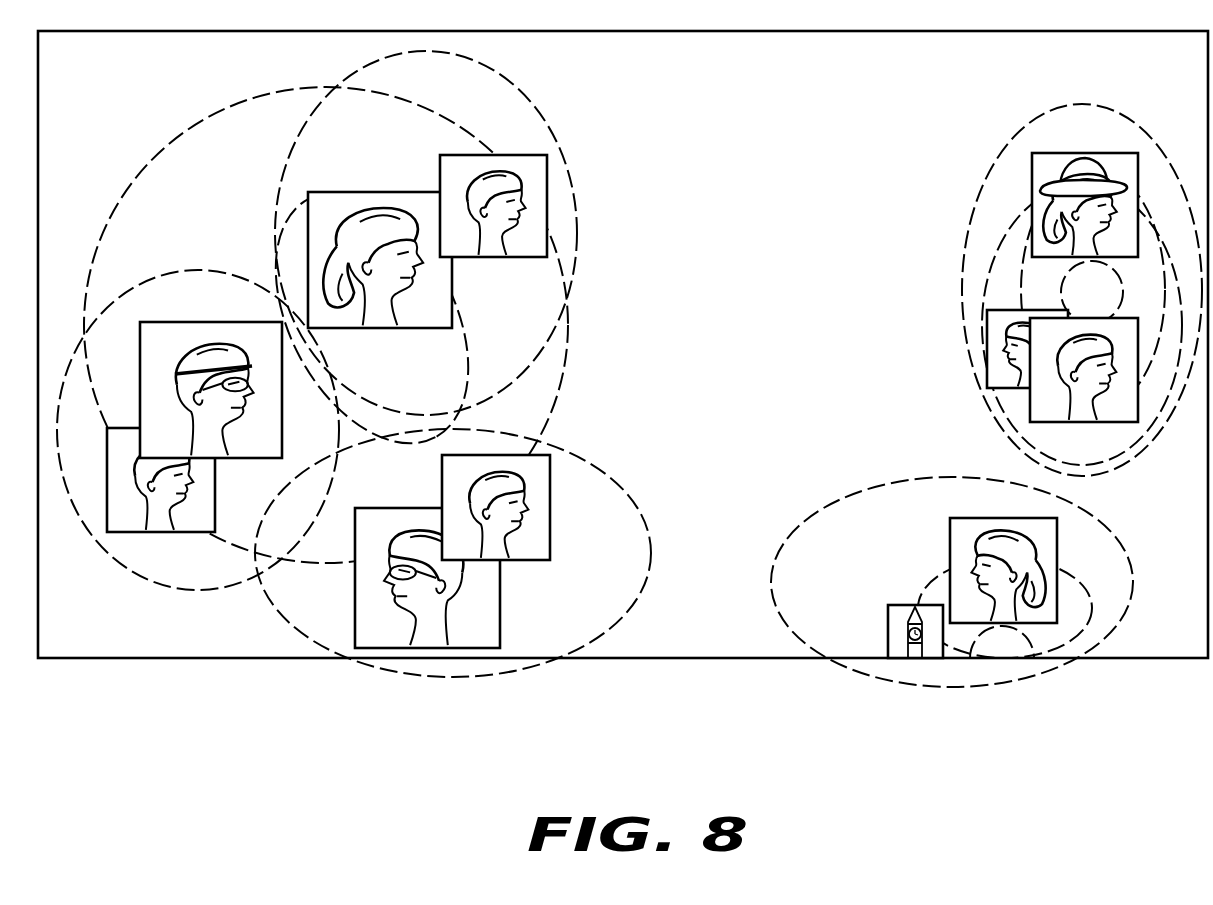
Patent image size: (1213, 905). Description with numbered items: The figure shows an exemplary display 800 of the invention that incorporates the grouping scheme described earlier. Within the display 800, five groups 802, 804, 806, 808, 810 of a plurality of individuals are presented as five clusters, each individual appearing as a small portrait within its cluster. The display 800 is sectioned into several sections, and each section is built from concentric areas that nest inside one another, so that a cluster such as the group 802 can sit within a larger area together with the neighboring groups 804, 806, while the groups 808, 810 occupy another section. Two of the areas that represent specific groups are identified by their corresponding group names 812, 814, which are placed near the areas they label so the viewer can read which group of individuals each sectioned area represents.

The display 800 is at (672, 771).
The group 802 is at (527, 104).
The group 804 is at (164, 272).
The group 806 is at (587, 459).
The group 808 is at (962, 290).
The group 810 is at (868, 487).
The group name 812 is at (117, 120).
The group name 814 is at (882, 123).